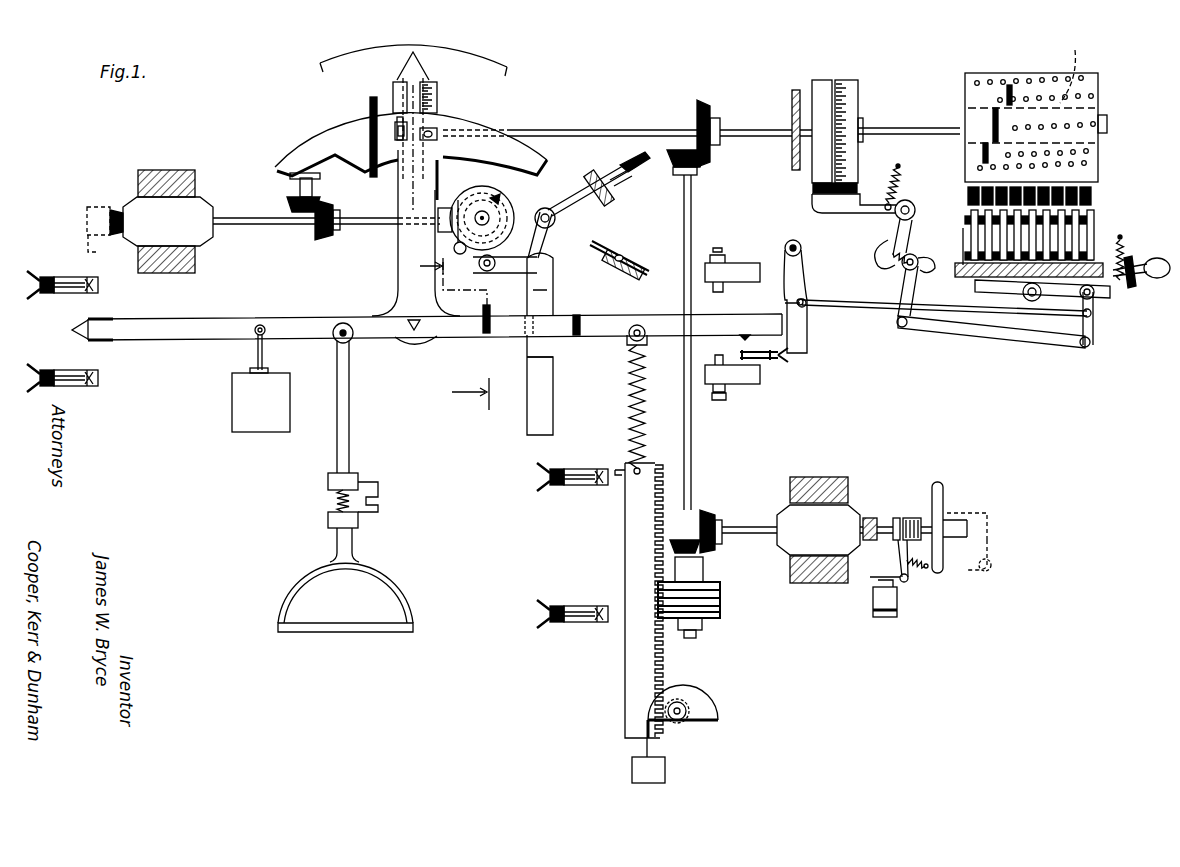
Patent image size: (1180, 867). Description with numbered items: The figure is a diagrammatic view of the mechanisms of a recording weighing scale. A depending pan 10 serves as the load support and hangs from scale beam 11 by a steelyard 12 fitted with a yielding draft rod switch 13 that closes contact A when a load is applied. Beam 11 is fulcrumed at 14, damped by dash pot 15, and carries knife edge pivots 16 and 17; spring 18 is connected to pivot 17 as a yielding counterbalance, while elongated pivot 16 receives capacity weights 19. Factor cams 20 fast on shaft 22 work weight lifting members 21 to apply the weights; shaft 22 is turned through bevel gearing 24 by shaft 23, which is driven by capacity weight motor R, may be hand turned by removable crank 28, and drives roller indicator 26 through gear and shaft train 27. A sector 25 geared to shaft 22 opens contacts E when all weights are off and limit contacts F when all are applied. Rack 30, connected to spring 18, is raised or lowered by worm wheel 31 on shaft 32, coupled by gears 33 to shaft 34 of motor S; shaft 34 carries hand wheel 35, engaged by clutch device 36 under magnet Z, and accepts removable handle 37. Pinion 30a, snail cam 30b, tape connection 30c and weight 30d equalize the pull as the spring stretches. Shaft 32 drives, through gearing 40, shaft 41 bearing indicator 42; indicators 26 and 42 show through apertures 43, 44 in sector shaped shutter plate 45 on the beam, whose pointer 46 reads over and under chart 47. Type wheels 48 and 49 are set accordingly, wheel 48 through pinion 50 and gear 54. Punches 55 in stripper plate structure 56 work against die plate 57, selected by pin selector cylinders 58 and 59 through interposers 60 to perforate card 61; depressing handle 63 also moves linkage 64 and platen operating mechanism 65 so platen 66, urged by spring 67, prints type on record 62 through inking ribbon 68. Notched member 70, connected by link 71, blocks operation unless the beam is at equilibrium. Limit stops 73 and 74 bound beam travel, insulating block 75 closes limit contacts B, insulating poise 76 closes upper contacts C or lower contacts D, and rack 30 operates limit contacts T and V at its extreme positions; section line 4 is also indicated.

The pan 10 is at (347, 630).
The scale beam 11 is at (456, 335).
The steelyard 12 is at (350, 440).
The yielding draft rod switch 13 is at (380, 497).
The fulcrum 14 is at (415, 326).
The damping dash pot 15 is at (247, 430).
The knife edge pivot 16 is at (548, 332).
The knife edge pivot 17 is at (646, 337).
The spring 18 is at (643, 380).
The capacity weight 19 is at (548, 380).
The factor cam 20 is at (503, 205).
The weight lifting member 21 is at (512, 273).
The factor cam shaft 22 is at (484, 214).
The shaft 23 is at (378, 226).
The bevel gearing 24 is at (460, 200).
The sector 25 is at (545, 229).
The roller indicator 26 is at (395, 84).
The gear and shaft train 27 is at (322, 205).
The removable crank 28 is at (90, 237).
The rack 30 is at (637, 550).
The pinion 30a is at (686, 705).
The snail cam 30b is at (718, 720).
The tape connection 30c is at (645, 745).
The weight 30d is at (632, 771).
The worm wheel 31 is at (722, 600).
The shaft 32 is at (692, 485).
The gears 33 is at (716, 550).
The shaft 34 is at (735, 526).
The hand wheel 35 is at (939, 484).
The clutch device 36 is at (910, 518).
The removable handle 37 is at (975, 558).
The gearing 40 is at (712, 162).
The shaft 41 is at (622, 128).
The indicator 42 is at (436, 86).
The aperture 43 is at (390, 127).
The aperture 44 is at (432, 134).
The sector shaped shutter plate 45 is at (477, 125).
The supplementary pointer 46 is at (430, 62).
The over and under chart 47 is at (485, 50).
The type wheel 48 is at (822, 80).
The type wheel 49 is at (858, 85).
The pinion 50 is at (793, 90).
The gear 54 is at (376, 180).
The punches 55 is at (1070, 247).
The stripper plate structure 56 is at (966, 242).
The die plate 57 is at (1005, 285).
The pin selector cylinder 58 is at (1098, 156).
The pin selector cylinder 59 is at (1081, 68).
The interposers 60 is at (1092, 197).
The card 61 is at (1123, 240).
The record 62 is at (805, 198).
The handle 63 is at (1145, 280).
The linkage 64 is at (1030, 340).
The platen operating mechanism 65 is at (895, 270).
The platen 66 is at (855, 215).
The spring 67 is at (900, 184).
The inking ribbon 68 is at (812, 186).
The member 70 is at (808, 337).
The link 71 is at (1002, 322).
The limit stop 73 is at (738, 384).
The limit stop 74 is at (730, 268).
The insulating block 75 is at (746, 333).
The insulating poise 76 is at (415, 327).
The section line 4 is at (464, 333).
The contact A is at (380, 508).
The limit contacts B is at (735, 352).
The upper contacts C is at (98, 285).
The lower contacts D is at (98, 378).
The contacts E is at (617, 176).
The limit contacts F is at (616, 260).
The capacity weight motor R is at (212, 221).
The motor S is at (835, 530).
The limit contacts T is at (600, 470).
The limit contacts V is at (575, 623).
The magnet Z is at (898, 600).